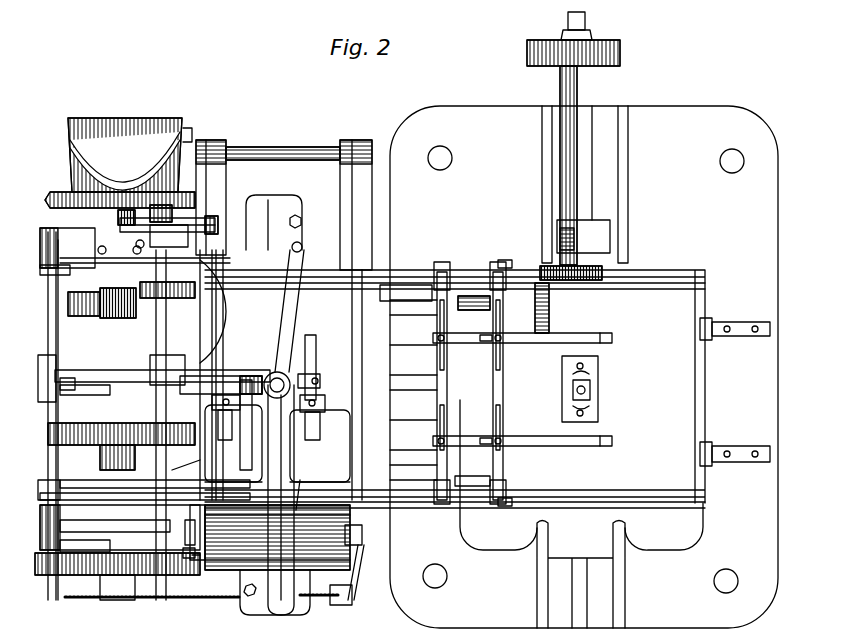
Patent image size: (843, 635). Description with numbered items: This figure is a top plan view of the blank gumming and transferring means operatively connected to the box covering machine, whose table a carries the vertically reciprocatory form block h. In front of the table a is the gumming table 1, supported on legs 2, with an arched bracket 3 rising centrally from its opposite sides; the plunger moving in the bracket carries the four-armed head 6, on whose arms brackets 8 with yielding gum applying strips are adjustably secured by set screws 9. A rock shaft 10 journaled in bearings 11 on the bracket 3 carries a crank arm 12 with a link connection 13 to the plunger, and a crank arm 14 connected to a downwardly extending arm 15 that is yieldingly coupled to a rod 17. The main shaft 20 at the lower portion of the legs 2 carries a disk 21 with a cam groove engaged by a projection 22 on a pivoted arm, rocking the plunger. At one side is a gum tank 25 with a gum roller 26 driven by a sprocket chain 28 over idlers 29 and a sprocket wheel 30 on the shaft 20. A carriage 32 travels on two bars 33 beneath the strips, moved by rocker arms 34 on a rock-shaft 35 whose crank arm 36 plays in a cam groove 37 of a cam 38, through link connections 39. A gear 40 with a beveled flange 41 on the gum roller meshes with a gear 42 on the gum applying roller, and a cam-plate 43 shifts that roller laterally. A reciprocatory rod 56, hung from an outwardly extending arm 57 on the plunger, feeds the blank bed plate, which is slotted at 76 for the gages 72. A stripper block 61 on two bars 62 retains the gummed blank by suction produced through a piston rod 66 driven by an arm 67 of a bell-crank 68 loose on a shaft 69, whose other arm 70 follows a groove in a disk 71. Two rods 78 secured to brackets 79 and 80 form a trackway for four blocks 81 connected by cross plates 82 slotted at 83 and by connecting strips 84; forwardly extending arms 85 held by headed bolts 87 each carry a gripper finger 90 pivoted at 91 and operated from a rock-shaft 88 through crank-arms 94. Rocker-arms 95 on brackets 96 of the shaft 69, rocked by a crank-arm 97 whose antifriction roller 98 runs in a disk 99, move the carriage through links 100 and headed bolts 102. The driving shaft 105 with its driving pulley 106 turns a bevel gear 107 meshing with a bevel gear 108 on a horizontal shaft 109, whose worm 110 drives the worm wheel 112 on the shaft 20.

The table a is at (584, 367).
The form block h is at (600, 390).
The table 1 is at (185, 462).
The legs 2 is at (120, 389).
The arched bracket 3 is at (280, 600).
The four-armed head 6 is at (277, 385).
The bracket 8 is at (240, 455).
The set screw 9 is at (320, 378).
The rock shaft 10 is at (200, 325).
The bearings 11 is at (185, 356).
The crank arm 12 is at (222, 375).
The link connection 13 is at (250, 375).
The crank arm 14 is at (218, 226).
The downwardly extending arm 15 is at (200, 220).
The rod 17 is at (165, 205).
The shaft 20 is at (156, 350).
The disk 21 is at (117, 205).
The projection 22 is at (117, 218).
The gum tank 25 is at (200, 572).
The gum roller 26 is at (255, 535).
The sprocket chain 28 is at (390, 570).
The idlers 29 is at (352, 598).
The sprocket wheel 30 is at (90, 600).
The carriage 32 is at (370, 518).
The bars 33 is at (350, 475).
The rocker arms 34 is at (366, 190).
The rock-shaft 35 is at (260, 150).
The crank arm 36 is at (192, 133).
The cam groove 37 is at (125, 161).
The cam 38 is at (125, 155).
The link connections 39 is at (200, 448).
The gear 40 is at (177, 547).
The beveled flange 41 is at (187, 549).
The gear 42 is at (190, 510).
The cam-plate 43 is at (212, 262).
The reciprocatory rod 56 is at (300, 242).
The outwardly extending arm 57 is at (290, 318).
The stripper block 61 is at (296, 432).
The bars 62 is at (330, 455).
The piston rod 66 is at (148, 382).
The arm 67 is at (75, 388).
The bell-crank 68 is at (38, 390).
The shaft 69 is at (58, 362).
The arm 70 is at (85, 394).
The disk 71 is at (121, 445).
The gages 72 is at (326, 432).
The slots 76 is at (279, 400).
The rods 78 is at (632, 487).
The brackets 79 is at (728, 462).
The brackets 80 is at (160, 474).
The blocks 81 is at (520, 482).
The cross plates 82 is at (495, 388).
The slots 83 is at (512, 425).
The connecting strips 84 is at (466, 476).
The forwardly extending arms 85 is at (558, 446).
The headed bolts 87 is at (510, 452).
The rock-shaft 88 is at (135, 248).
The gripper finger 90 is at (615, 389).
The pivot 91 is at (310, 491).
The crank-arm 94 is at (476, 455).
The rocker-arms 95 is at (95, 500).
The brackets 96 is at (70, 476).
The crank-arm 97 is at (78, 535).
The antifriction roller 98 is at (115, 548).
The disk 99 is at (85, 575).
The link 100 is at (420, 505).
The headed bolt 102 is at (505, 514).
The driving shaft 105 is at (580, 95).
The driving pulley 106 is at (528, 62).
The bevel gear 107 is at (603, 273).
The bevel gear 108 is at (550, 310).
The horizontal shaft 109 is at (402, 292).
The worm 110 is at (110, 320).
The worm wheel 112 is at (80, 318).